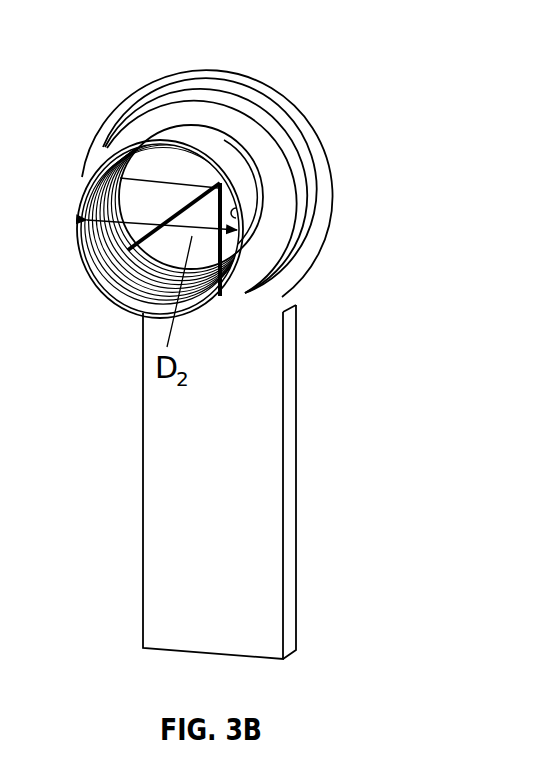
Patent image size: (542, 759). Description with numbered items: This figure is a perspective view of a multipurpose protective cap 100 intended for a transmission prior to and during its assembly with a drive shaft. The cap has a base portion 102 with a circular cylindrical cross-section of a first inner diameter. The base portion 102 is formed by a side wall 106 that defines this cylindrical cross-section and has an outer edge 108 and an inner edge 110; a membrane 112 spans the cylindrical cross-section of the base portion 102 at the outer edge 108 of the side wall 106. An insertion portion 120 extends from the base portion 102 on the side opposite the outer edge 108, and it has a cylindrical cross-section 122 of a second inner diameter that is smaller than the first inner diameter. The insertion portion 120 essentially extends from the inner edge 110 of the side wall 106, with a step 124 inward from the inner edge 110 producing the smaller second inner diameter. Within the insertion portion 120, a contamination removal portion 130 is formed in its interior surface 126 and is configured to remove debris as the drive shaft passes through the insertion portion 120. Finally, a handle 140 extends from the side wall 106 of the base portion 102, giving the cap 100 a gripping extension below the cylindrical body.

The multipurpose protective cap 100 is at (350, 40).
The base portion 102 is at (332, 242).
The side wall 106 is at (328, 135).
The outer edge 108 is at (280, 95).
The inner edge 110 is at (243, 103).
The membrane 112 is at (178, 215).
The insertion portion 120 is at (266, 258).
The cylindrical cross-section 122 is at (242, 218).
The step 124 is at (143, 107).
The interior surface 126 is at (100, 237).
The contamination removal portion 130 is at (125, 277).
The handle 140 is at (270, 572).